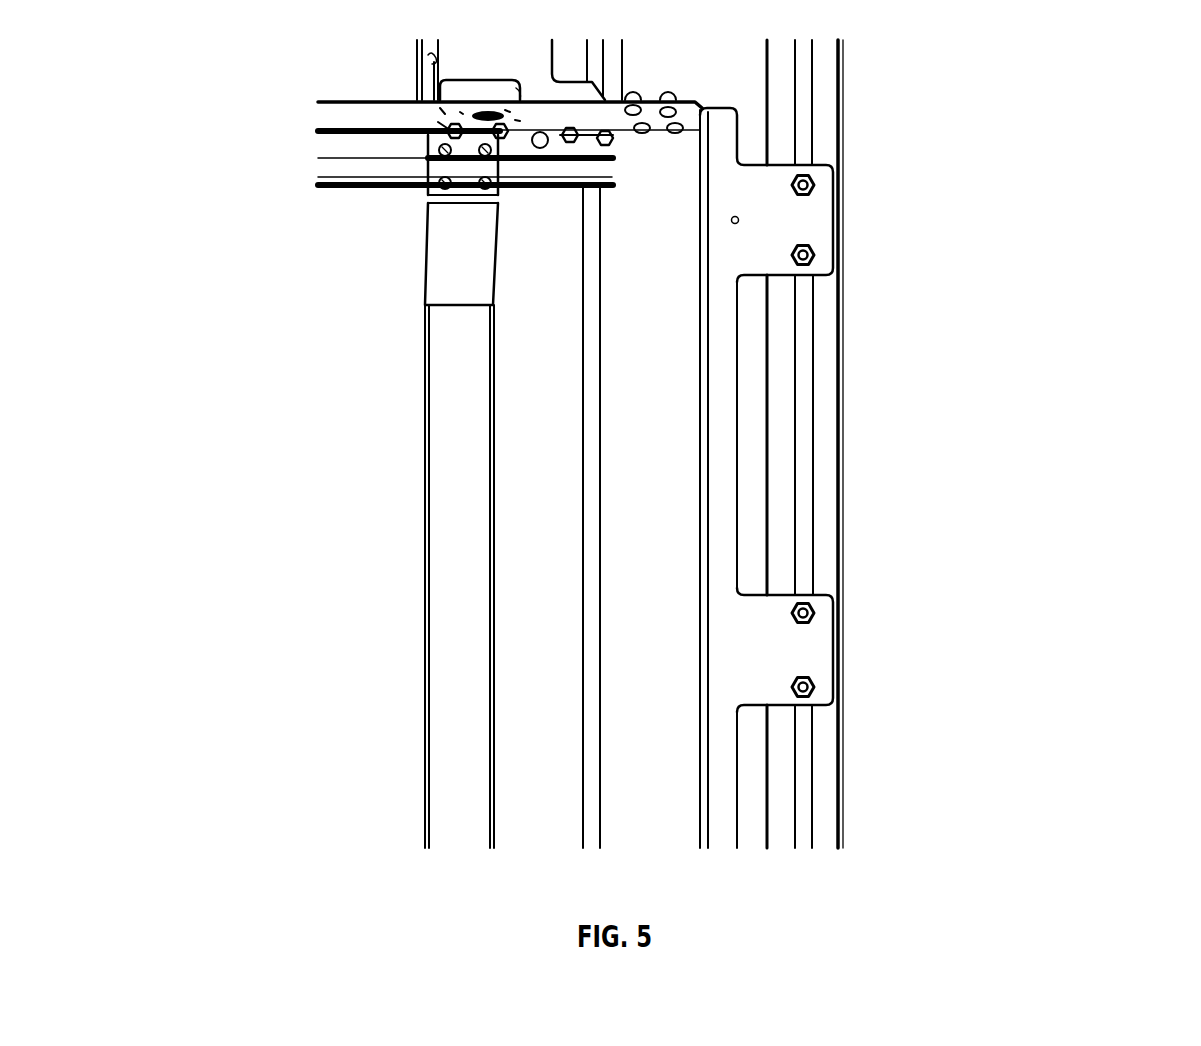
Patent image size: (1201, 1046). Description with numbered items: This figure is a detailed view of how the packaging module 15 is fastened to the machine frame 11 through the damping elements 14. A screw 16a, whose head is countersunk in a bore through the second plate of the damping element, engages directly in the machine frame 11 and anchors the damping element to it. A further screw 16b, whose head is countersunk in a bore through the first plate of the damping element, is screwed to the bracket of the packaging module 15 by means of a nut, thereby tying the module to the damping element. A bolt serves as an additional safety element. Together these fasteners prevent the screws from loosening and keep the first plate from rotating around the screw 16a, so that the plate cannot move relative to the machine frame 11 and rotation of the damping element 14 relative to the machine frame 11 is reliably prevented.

The machine frame 11 is at (832, 503).
The damping element 14 is at (845, 253).
The packaging module 15 is at (303, 151).
The screw 16a is at (815, 186).
The further screw 16b is at (813, 283).